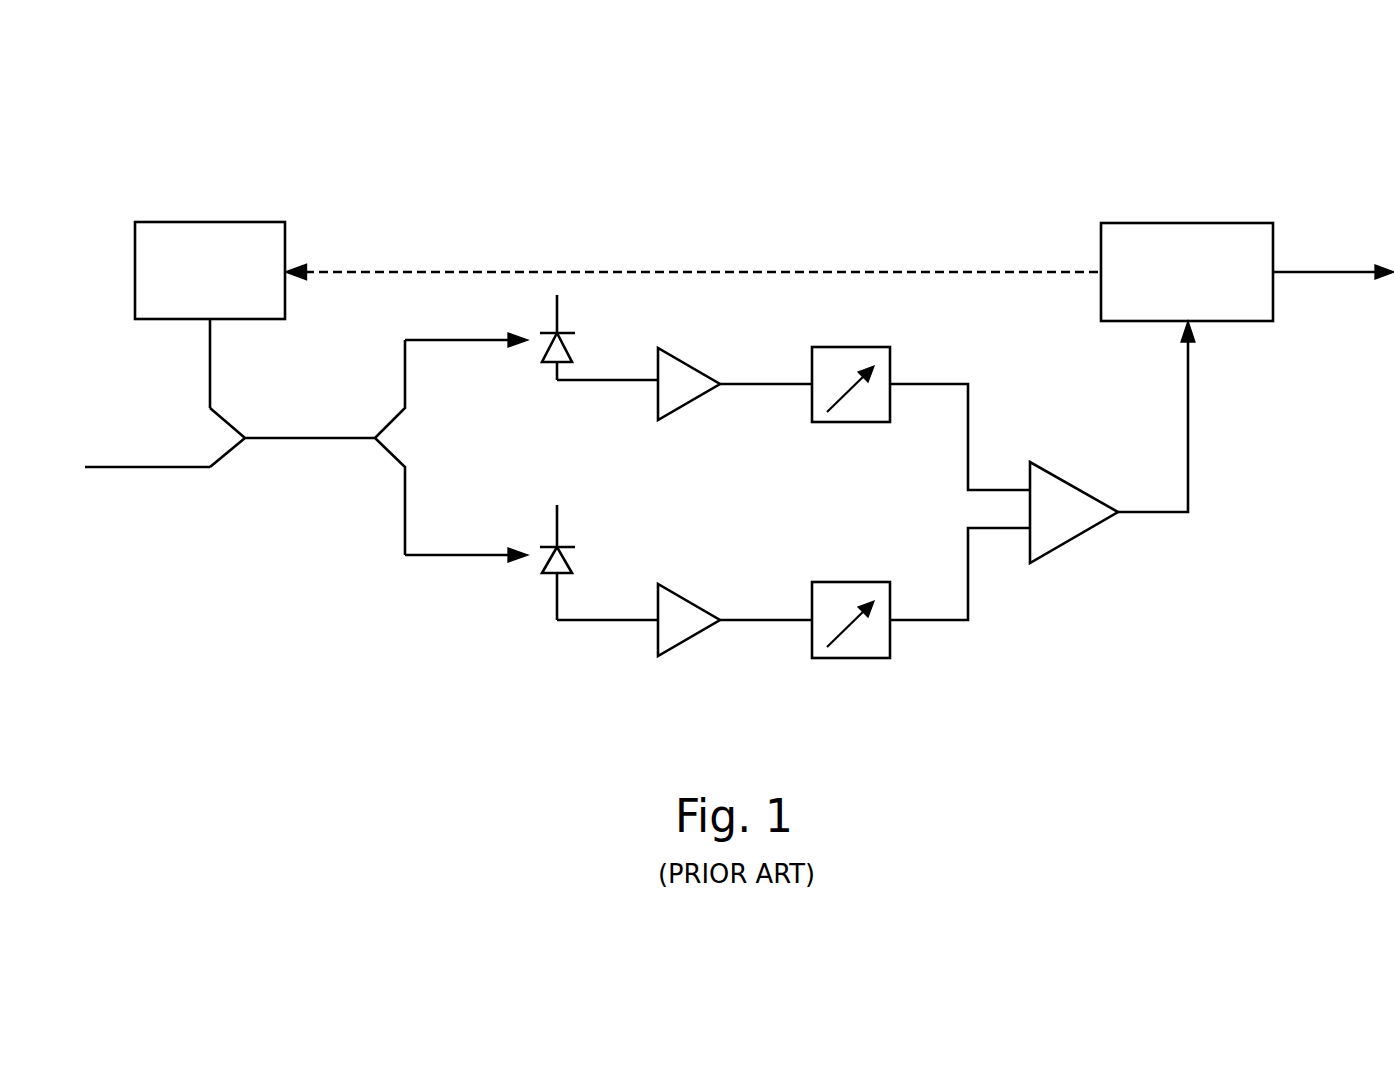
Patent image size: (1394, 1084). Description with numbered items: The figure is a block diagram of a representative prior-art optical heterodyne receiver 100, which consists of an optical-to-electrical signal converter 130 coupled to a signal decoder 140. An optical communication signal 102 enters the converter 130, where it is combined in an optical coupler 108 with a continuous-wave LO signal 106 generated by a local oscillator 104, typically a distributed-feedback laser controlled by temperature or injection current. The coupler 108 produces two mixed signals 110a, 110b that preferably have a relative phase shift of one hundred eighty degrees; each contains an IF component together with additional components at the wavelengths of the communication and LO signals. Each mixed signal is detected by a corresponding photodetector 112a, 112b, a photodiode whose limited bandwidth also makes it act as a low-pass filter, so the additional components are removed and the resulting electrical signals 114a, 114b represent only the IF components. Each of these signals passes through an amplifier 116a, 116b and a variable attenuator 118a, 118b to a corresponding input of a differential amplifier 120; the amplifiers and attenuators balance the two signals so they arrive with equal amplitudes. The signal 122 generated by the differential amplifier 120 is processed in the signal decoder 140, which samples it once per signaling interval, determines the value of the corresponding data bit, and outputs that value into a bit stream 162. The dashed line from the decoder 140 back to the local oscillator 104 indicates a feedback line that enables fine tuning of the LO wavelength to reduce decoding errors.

The optical heterodyne receiver 100 is at (277, 720).
The optical communication signal 102 is at (160, 467).
The local oscillator 104 is at (192, 222).
The LO signal 106 is at (210, 376).
The optical coupler 108 is at (294, 502).
The mixed signal 110a is at (470, 342).
The mixed signal 110b is at (455, 553).
The photodetector 112a is at (575, 350).
The photodetector 112b is at (573, 563).
The electrical signal 114a is at (605, 384).
The electrical signal 114b is at (608, 622).
The amplifier 116a is at (685, 358).
The amplifier 116b is at (690, 598).
The variable attenuator 118a is at (848, 347).
The variable attenuator 118b is at (840, 582).
The differential amplifier 120 is at (1090, 490).
The signal 122 is at (1190, 437).
The optical-to-electrical signal converter 130 is at (714, 684).
The signal decoder 140 is at (1172, 223).
The bit stream 162 is at (1308, 272).